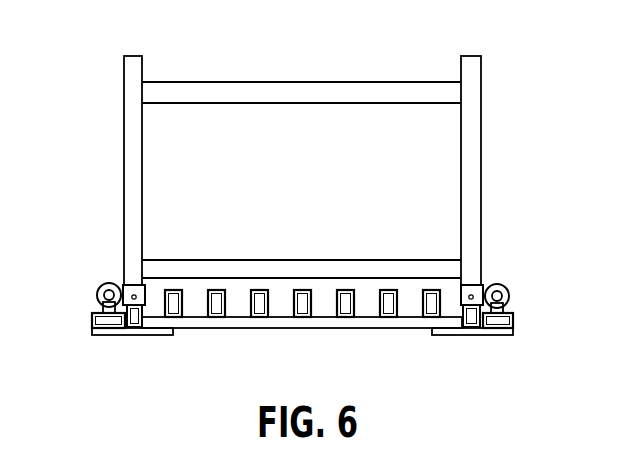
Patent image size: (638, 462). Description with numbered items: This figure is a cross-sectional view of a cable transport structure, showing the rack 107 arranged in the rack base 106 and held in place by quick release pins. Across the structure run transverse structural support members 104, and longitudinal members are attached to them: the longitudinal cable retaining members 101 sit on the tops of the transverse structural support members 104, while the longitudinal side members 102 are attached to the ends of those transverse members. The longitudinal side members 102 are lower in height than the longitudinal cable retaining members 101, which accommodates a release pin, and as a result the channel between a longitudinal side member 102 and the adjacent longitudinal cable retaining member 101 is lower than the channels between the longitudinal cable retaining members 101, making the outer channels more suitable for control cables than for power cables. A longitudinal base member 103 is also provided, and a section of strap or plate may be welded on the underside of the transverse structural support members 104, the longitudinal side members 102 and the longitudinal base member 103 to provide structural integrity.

The rack 107 is at (118, 90).
The longitudinal cable retaining member 101 is at (172, 288).
The longitudinal side member 102 is at (131, 296).
The rack base 106 is at (473, 285).
The longitudinal base member 103 is at (113, 333).
The transverse structural support member 104 is at (200, 333).